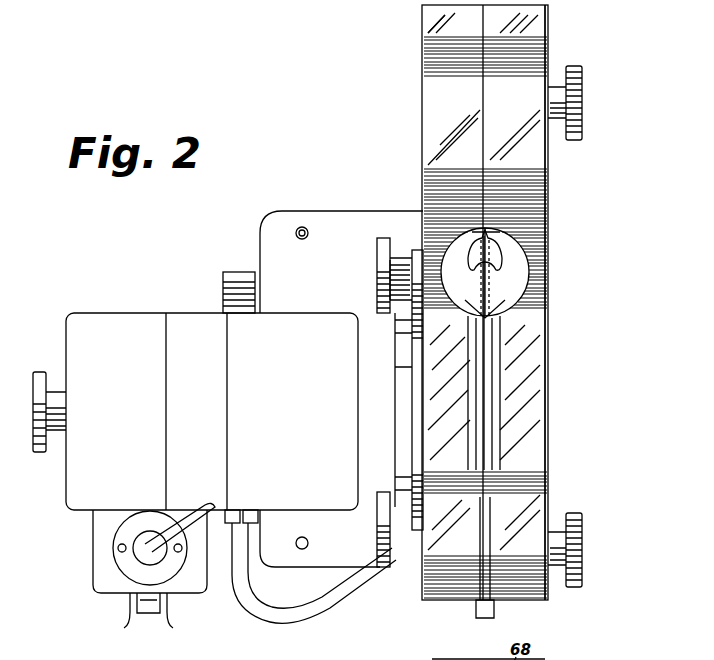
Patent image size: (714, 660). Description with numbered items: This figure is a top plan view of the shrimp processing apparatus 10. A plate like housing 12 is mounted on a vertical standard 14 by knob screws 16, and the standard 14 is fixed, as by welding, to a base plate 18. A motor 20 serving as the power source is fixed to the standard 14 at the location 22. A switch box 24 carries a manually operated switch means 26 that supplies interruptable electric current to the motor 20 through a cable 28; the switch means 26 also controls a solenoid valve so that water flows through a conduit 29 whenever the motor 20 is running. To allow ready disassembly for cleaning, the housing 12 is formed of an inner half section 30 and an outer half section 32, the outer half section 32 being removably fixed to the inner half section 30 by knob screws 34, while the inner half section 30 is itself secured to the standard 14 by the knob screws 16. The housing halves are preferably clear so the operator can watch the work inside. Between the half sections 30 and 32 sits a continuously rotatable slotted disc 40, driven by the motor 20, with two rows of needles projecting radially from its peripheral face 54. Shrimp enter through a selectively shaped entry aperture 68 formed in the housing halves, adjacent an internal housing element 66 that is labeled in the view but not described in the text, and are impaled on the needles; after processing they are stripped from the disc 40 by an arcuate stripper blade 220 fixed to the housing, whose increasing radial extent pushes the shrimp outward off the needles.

The shrimp processing apparatus 10 is at (314, 181).
The plate like housing 12 is at (415, 123).
The vertical standard 14 is at (417, 397).
The knob screws 16 is at (377, 280).
The base plate 18 is at (335, 273).
The motor 20 is at (268, 421).
The motor fixing location 22 is at (406, 356).
The switch box 24 is at (100, 569).
The switch means 26 is at (152, 622).
The cable 28 is at (198, 514).
The conduit 29 is at (348, 602).
The inner half section 30 is at (432, 97).
The outer half section 32 is at (548, 161).
The knob screws 34 is at (582, 119).
The slotted disc 40 is at (528, 283).
The peripheral face 54 is at (520, 309).
The rotor member 66 is at (528, 245).
The shrimp entry aperture 68 is at (508, 268).
The stripper blade 220 is at (474, 610).